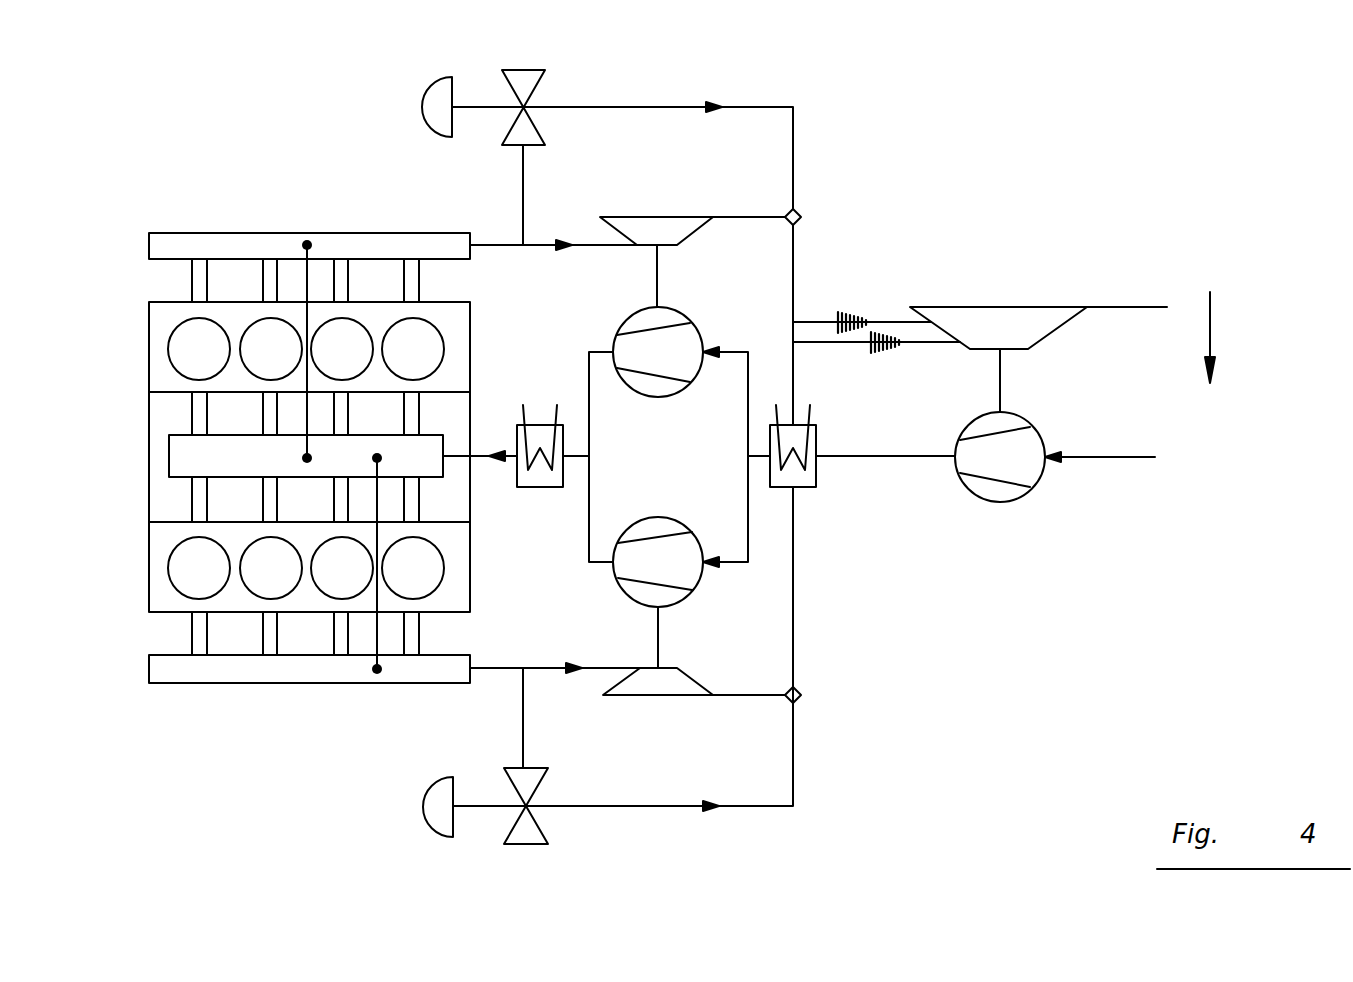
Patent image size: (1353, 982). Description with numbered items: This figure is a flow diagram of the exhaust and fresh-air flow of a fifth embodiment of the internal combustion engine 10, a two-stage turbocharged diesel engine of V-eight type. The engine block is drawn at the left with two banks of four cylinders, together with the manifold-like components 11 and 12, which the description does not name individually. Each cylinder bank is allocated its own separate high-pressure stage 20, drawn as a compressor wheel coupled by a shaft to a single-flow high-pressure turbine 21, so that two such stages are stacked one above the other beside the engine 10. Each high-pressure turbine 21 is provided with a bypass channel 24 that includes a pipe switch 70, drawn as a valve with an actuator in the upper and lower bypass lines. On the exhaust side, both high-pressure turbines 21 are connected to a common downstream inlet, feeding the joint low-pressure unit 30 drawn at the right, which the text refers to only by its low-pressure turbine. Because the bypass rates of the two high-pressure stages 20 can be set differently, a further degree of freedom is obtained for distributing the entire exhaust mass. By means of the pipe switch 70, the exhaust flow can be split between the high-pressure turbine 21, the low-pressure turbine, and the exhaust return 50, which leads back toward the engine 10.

The internal combustion engine 10 is at (227, 196).
The intake manifold 11 is at (306, 440).
The exhaust manifold 12 is at (358, 238).
The exhaust return 50 is at (309, 475).
The high-pressure stage 20 is at (596, 325).
The high-pressure turbine 21 is at (645, 225).
The bypass channel 24 is at (607, 107).
The second-stage turbocharger 30 is at (1019, 280).
The pipe switch 70 is at (515, 70).